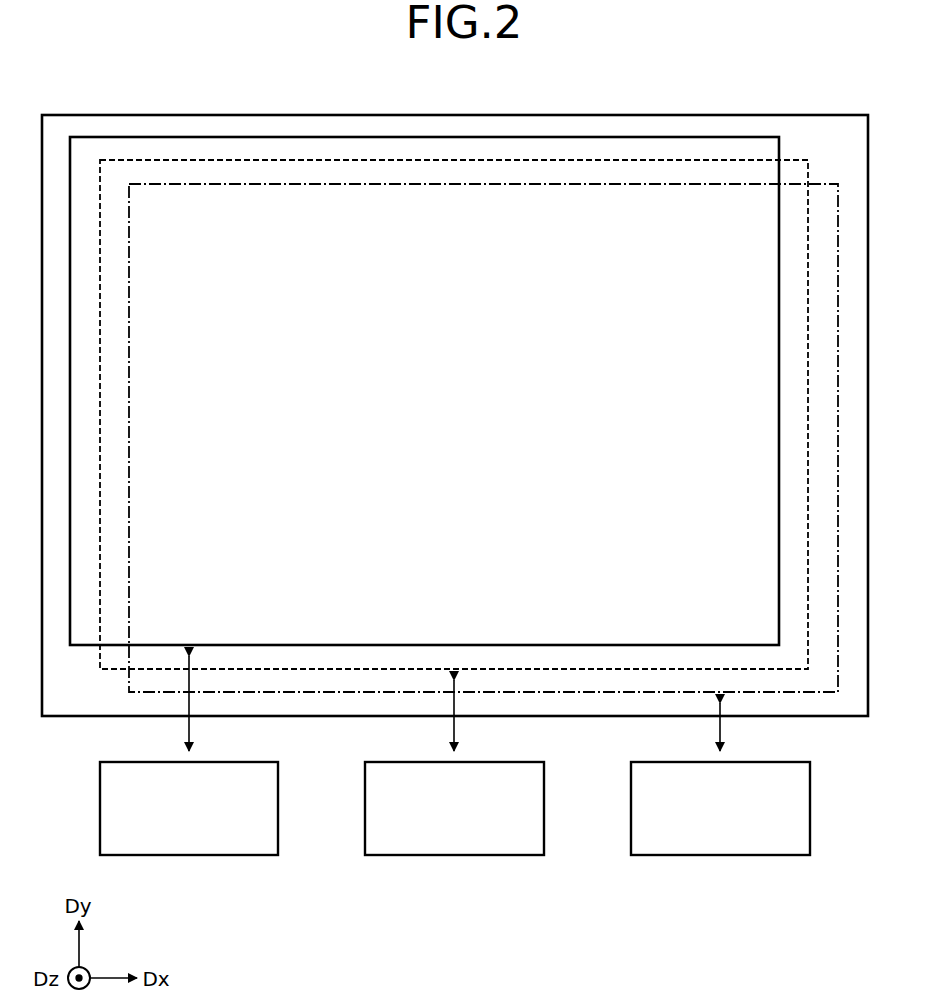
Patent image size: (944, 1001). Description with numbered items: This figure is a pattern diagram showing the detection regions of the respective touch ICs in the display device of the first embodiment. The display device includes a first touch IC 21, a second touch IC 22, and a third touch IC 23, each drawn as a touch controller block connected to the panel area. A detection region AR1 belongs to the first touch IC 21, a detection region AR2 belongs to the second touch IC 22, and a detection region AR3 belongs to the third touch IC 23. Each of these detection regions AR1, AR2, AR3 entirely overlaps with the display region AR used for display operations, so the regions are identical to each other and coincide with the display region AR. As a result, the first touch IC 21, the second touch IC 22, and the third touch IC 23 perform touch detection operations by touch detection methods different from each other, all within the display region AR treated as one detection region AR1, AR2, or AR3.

The display region AR is at (595, 115).
The detection region of the first touch IC AR1 is at (202, 137).
The detection region of the second touch IC AR2 is at (467, 160).
The detection region of the third touch IC AR3 is at (729, 184).
The first touch IC 21 is at (234, 762).
The second touch IC 22 is at (490, 762).
The third touch IC 23 is at (756, 762).